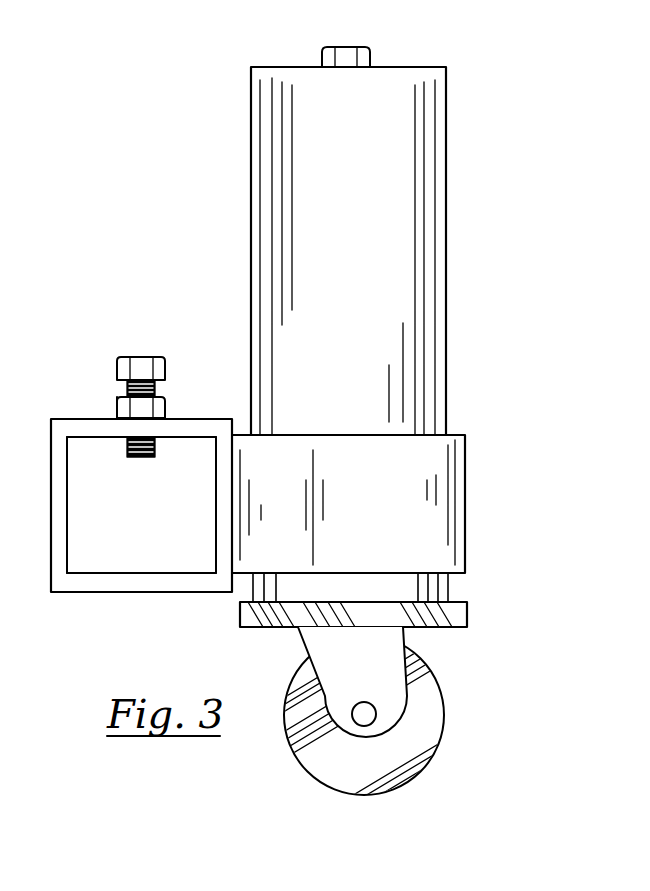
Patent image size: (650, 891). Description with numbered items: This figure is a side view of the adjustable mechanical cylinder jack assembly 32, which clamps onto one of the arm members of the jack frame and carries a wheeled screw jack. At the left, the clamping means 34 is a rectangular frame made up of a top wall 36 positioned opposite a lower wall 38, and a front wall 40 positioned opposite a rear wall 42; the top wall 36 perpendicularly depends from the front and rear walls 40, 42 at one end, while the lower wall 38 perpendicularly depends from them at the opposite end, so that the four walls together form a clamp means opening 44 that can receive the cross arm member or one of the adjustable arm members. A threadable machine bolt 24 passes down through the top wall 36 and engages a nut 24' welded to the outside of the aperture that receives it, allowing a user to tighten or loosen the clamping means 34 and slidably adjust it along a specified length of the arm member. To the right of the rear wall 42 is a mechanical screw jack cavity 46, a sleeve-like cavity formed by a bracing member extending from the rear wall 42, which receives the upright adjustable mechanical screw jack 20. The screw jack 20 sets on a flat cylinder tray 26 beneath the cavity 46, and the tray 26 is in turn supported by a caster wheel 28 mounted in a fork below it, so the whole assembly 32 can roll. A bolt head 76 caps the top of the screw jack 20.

The adjustable mechanical screw jack 20 is at (417, 217).
The threadable machine bolt 24 is at (116, 398).
The welded nut 24' is at (168, 402).
The cylinder tray 26 is at (467, 615).
The caster wheel 28 is at (445, 690).
The adjustable mechanical cylinder jack assembly 32 is at (188, 219).
The clamping means 34 is at (80, 419).
The top wall 36 is at (192, 442).
The lower wall 38 is at (141, 557).
The front wall 40 is at (70, 508).
The rear wall 42 is at (216, 520).
The clamp means opening 44 is at (141, 538).
The mechanical screw jack cavity 46 is at (466, 452).
The bolt 76 is at (323, 52).